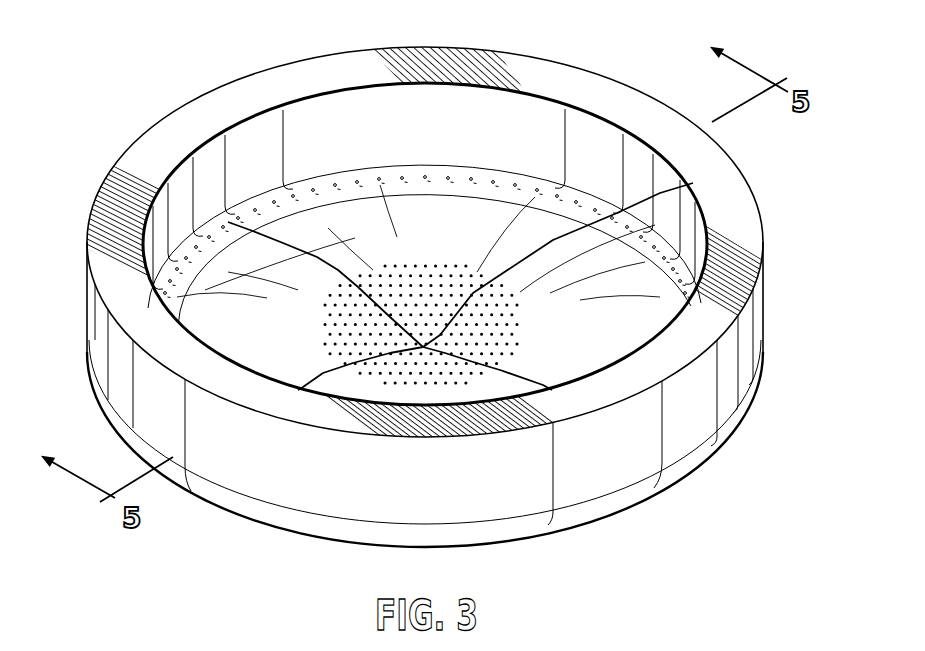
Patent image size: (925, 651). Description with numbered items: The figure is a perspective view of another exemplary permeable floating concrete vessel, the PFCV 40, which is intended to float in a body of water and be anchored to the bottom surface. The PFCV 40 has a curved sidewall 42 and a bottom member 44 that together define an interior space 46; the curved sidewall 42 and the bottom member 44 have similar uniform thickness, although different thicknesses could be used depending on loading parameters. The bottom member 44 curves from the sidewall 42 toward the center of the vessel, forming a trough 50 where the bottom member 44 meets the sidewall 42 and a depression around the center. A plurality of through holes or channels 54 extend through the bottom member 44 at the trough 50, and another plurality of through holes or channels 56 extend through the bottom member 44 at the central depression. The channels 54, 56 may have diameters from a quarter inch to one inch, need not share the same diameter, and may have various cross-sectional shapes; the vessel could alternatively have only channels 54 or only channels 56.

The permeable floating concrete vessel 40 is at (445, 281).
The curved sidewall 42 is at (687, 407).
The bottom member 44 is at (580, 349).
The interior space 46 is at (660, 218).
The trough 50 is at (257, 205).
The through holes or channels 54 is at (553, 200).
The through holes or channels 56 is at (423, 267).